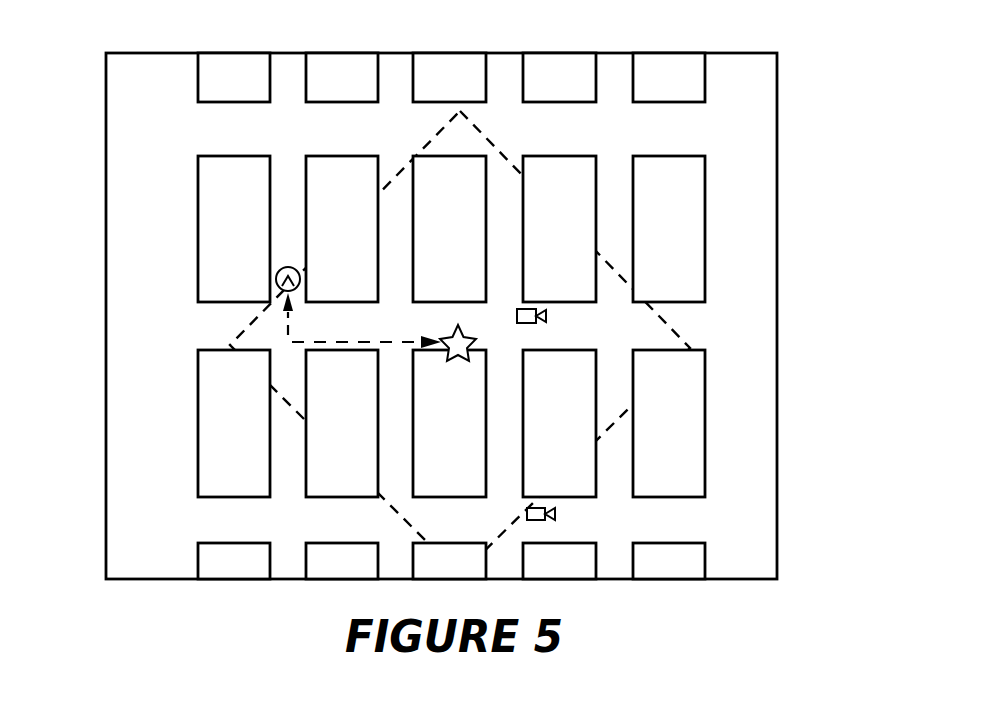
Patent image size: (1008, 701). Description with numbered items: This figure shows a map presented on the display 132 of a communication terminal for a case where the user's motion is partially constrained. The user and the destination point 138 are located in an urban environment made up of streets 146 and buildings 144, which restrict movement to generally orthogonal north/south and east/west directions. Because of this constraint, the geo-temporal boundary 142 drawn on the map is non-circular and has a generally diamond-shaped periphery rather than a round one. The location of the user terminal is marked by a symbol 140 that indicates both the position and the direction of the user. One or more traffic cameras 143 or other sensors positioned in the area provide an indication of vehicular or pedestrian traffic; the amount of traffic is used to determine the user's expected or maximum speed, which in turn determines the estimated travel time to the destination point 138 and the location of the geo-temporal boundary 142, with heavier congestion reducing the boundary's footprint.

The display 132 is at (778, 117).
The destination point 138 is at (456, 332).
The symbol 140 is at (279, 270).
The geo-temporal boundary 142 is at (668, 322).
The traffic cameras 143 is at (528, 323).
The buildings 144 is at (706, 217).
The streets 146 is at (220, 128).